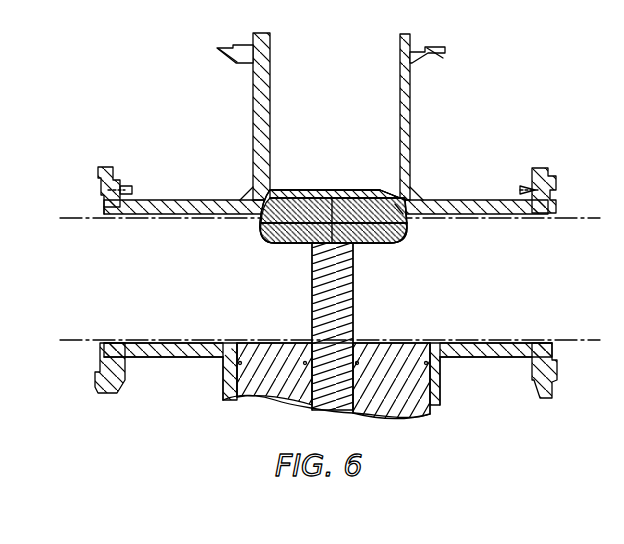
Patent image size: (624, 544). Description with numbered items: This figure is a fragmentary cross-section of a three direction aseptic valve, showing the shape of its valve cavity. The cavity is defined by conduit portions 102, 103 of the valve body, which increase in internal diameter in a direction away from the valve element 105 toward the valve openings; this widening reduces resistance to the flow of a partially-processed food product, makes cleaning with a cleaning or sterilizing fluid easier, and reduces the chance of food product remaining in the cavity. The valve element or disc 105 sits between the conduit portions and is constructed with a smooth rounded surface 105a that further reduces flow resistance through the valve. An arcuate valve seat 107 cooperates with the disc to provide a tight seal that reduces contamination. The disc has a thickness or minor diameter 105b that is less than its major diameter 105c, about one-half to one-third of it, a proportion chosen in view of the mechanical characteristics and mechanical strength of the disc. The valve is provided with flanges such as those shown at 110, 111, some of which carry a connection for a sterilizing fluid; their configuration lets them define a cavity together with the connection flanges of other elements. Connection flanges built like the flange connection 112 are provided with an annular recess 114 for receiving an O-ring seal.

The conduit portion 102 is at (470, 214).
The conduit portion 103 is at (160, 215).
The valve element 105 is at (343, 217).
The smooth rounded surface 105a is at (272, 197).
The minor diameter 105b is at (336, 212).
The major diameter 105c is at (384, 236).
The arcuate valve seat 107 is at (398, 212).
The flange 110 is at (241, 48).
The flange 111 is at (116, 185).
The flange connection 112 is at (106, 189).
The annular recess 114 is at (95, 392).